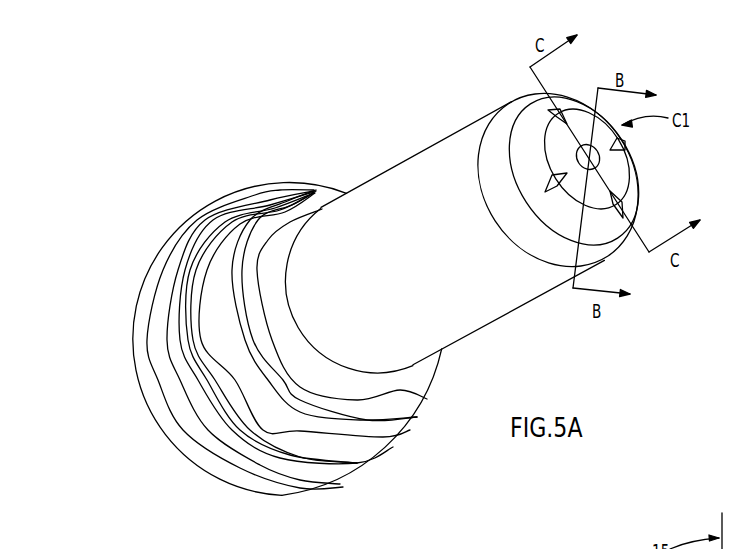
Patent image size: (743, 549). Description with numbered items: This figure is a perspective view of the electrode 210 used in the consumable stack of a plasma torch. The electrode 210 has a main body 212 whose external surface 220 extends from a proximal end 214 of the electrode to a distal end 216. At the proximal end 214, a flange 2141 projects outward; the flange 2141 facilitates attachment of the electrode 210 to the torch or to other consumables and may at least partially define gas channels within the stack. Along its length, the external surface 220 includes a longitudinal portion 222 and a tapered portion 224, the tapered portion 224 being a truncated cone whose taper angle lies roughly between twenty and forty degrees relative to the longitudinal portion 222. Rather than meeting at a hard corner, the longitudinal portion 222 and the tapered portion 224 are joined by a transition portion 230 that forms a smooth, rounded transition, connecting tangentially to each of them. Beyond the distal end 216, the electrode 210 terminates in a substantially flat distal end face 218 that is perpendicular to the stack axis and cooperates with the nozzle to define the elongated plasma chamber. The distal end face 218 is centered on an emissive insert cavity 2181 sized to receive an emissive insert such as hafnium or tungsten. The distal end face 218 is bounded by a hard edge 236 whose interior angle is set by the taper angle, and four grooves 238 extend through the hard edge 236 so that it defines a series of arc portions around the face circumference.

The electrode 210 is at (387, 92).
The main body 212 is at (412, 279).
The proximal end 214 is at (143, 280).
The flange 2141 is at (217, 195).
The distal end 216 is at (619, 248).
The distal end face 218 is at (633, 177).
The emissive insert cavity 2181 is at (604, 158).
The external surface 220 is at (423, 313).
The longitudinal portion 222 is at (410, 187).
The tapered portion 224 is at (520, 103).
The transition portion 230 is at (490, 112).
The hard edge 236 is at (582, 98).
The grooves 238 is at (548, 182).